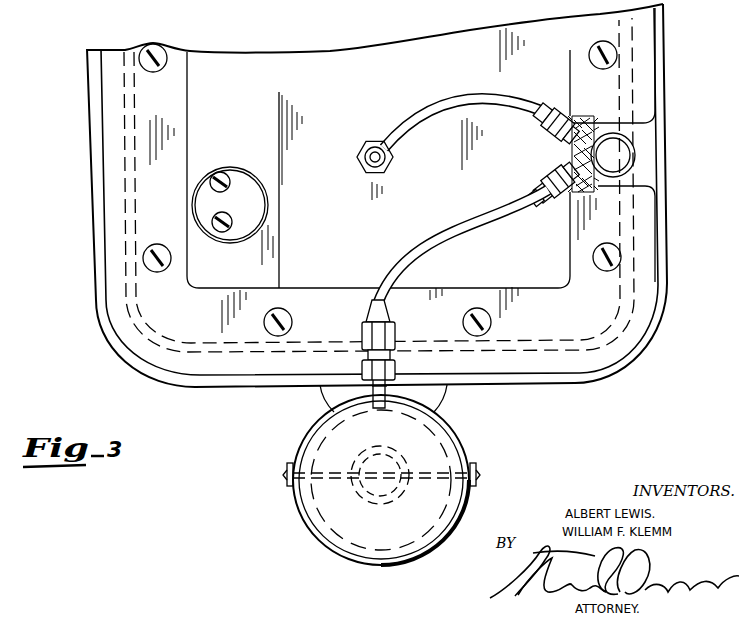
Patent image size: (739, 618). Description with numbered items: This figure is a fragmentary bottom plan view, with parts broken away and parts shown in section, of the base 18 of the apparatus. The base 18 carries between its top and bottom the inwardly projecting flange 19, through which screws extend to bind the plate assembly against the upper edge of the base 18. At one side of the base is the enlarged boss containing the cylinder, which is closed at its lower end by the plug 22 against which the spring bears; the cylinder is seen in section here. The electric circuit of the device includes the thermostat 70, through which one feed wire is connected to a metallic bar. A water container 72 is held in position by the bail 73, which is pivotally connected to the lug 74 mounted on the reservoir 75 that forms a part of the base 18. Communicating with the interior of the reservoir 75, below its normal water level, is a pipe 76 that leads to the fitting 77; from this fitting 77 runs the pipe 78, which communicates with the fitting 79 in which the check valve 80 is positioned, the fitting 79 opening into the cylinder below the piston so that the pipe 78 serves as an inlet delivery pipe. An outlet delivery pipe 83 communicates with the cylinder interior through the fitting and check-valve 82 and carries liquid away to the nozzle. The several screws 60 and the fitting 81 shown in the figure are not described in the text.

The base 18 is at (668, 48).
The inwardly projecting flange 19 is at (643, 248).
The plug 22 is at (622, 160).
The screws 60 is at (160, 45).
The thermostat 70 is at (236, 178).
The water container 72 is at (398, 502).
The bail 73 is at (478, 482).
The lug 74 is at (285, 470).
The reservoir 75 is at (406, 562).
The pipe 76 is at (396, 378).
The fitting 77 is at (392, 330).
The pipe 78 is at (447, 233).
The fitting 79 is at (574, 202).
The check valve 80 is at (570, 170).
The fitting 81 is at (566, 108).
The fitting and check-valve 82 is at (590, 128).
The outlet delivery pipe 83 is at (452, 106).